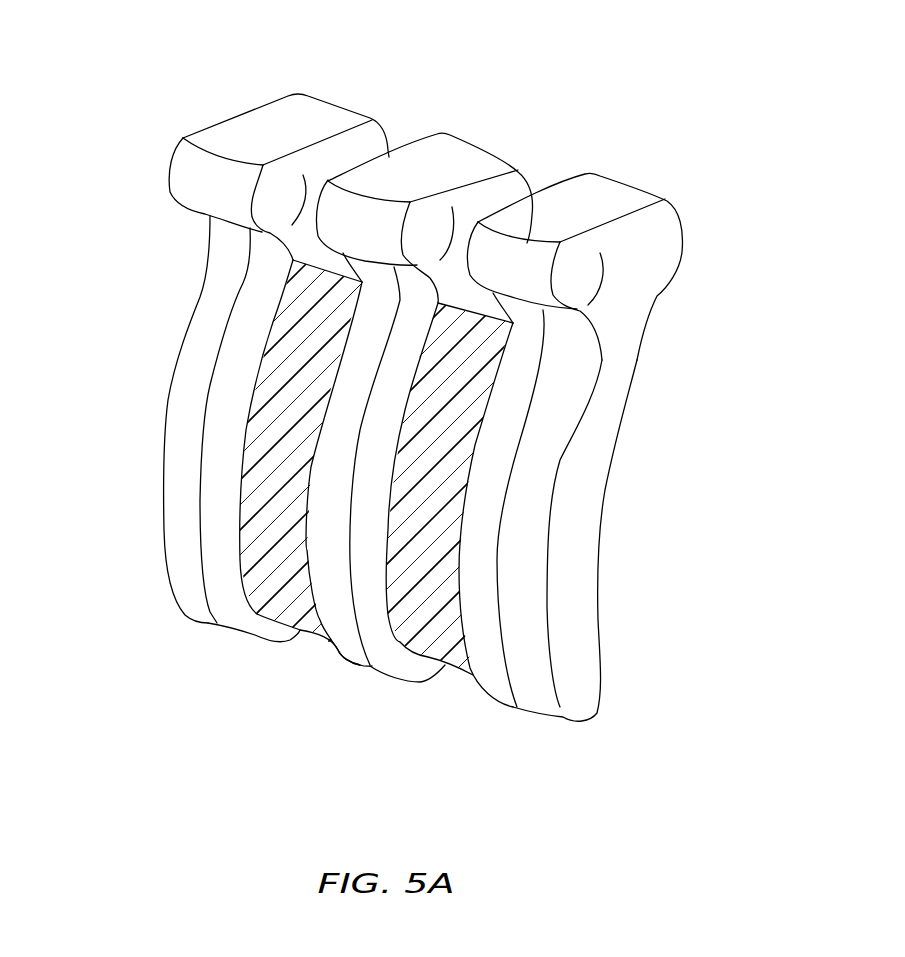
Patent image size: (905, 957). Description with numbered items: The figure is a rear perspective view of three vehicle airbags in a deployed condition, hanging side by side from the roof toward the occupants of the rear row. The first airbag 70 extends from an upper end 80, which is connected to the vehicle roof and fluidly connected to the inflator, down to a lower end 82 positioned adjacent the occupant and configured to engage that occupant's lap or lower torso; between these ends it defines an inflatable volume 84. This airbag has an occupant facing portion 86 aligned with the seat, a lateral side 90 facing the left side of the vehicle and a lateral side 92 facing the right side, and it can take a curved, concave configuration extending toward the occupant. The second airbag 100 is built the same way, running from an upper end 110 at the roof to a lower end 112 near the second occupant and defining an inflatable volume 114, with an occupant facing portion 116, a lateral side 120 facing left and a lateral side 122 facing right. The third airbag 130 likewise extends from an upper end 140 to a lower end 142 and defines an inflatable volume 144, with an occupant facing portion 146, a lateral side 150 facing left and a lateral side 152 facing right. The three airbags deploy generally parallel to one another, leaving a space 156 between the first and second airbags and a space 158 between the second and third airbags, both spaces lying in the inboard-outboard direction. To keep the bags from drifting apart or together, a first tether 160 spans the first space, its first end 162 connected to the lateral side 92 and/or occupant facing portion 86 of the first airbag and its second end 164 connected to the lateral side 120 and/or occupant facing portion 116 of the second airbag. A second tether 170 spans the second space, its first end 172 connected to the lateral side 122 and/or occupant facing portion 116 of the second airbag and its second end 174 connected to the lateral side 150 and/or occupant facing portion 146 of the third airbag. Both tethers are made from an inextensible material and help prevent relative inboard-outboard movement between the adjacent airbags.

The airbag 70 is at (265, 97).
The upper end 80 is at (112, 172).
The lower end 82 is at (234, 640).
The inflatable volume 84 is at (202, 412).
The occupant facing portion 86 is at (203, 505).
The lateral side 90 is at (198, 131).
The lateral side 92 is at (340, 150).
The airbag 100 is at (455, 134).
The upper end 110 is at (530, 165).
The lower end 112 is at (372, 669).
The inflatable volume 114 is at (454, 220).
The occupant facing portion 116 is at (370, 497).
The lateral side 120 is at (388, 153).
The lateral side 122 is at (504, 190).
The airbag 130 is at (663, 190).
The upper end 140 is at (710, 238).
The lower end 142 is at (563, 737).
The inflatable volume 144 is at (582, 513).
The occupant facing portion 146 is at (500, 595).
The lateral side 150 is at (575, 180).
The lateral side 152 is at (652, 290).
The space 156 is at (307, 648).
The space 158 is at (472, 707).
The first tether 160 is at (277, 562).
The first end 162 is at (267, 315).
The second end 164 is at (340, 380).
The second tether 170 is at (437, 597).
The first end 172 is at (338, 647).
The second end 174 is at (505, 363).